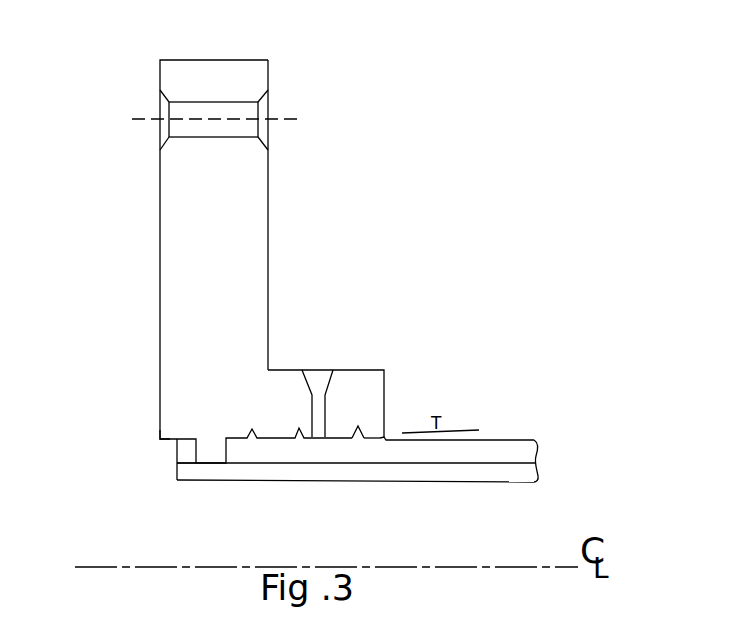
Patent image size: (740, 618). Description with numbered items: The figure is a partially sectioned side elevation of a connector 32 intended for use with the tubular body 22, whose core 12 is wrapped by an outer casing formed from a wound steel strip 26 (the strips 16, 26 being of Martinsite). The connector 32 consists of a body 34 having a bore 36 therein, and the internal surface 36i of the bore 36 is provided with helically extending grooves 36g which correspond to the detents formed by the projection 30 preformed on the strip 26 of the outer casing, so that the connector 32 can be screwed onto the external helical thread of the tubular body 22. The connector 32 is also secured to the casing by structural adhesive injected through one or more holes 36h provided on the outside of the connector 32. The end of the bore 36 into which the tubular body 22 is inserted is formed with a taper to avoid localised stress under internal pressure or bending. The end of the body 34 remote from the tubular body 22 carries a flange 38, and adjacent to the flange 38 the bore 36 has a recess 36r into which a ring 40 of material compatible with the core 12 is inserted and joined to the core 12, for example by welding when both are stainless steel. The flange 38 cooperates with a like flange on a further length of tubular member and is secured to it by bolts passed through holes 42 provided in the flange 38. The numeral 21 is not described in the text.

The core 12 is at (447, 470).
The strip 16 is at (430, 433).
The steel strip 26 is at (385, 433).
The step 21 is at (386, 435).
The tubular body 22 is at (502, 448).
The projection 30 is at (360, 441).
The connector 32 is at (232, 236).
The body 34 is at (202, 287).
The bore 36 is at (312, 389).
The helically extending grooves 36g is at (298, 427).
The holes 36h is at (325, 417).
The internal surface 36i is at (274, 445).
The recess 36r is at (168, 438).
The flange 38 is at (242, 205).
The ring 40 is at (187, 455).
The holes 42 is at (232, 112).